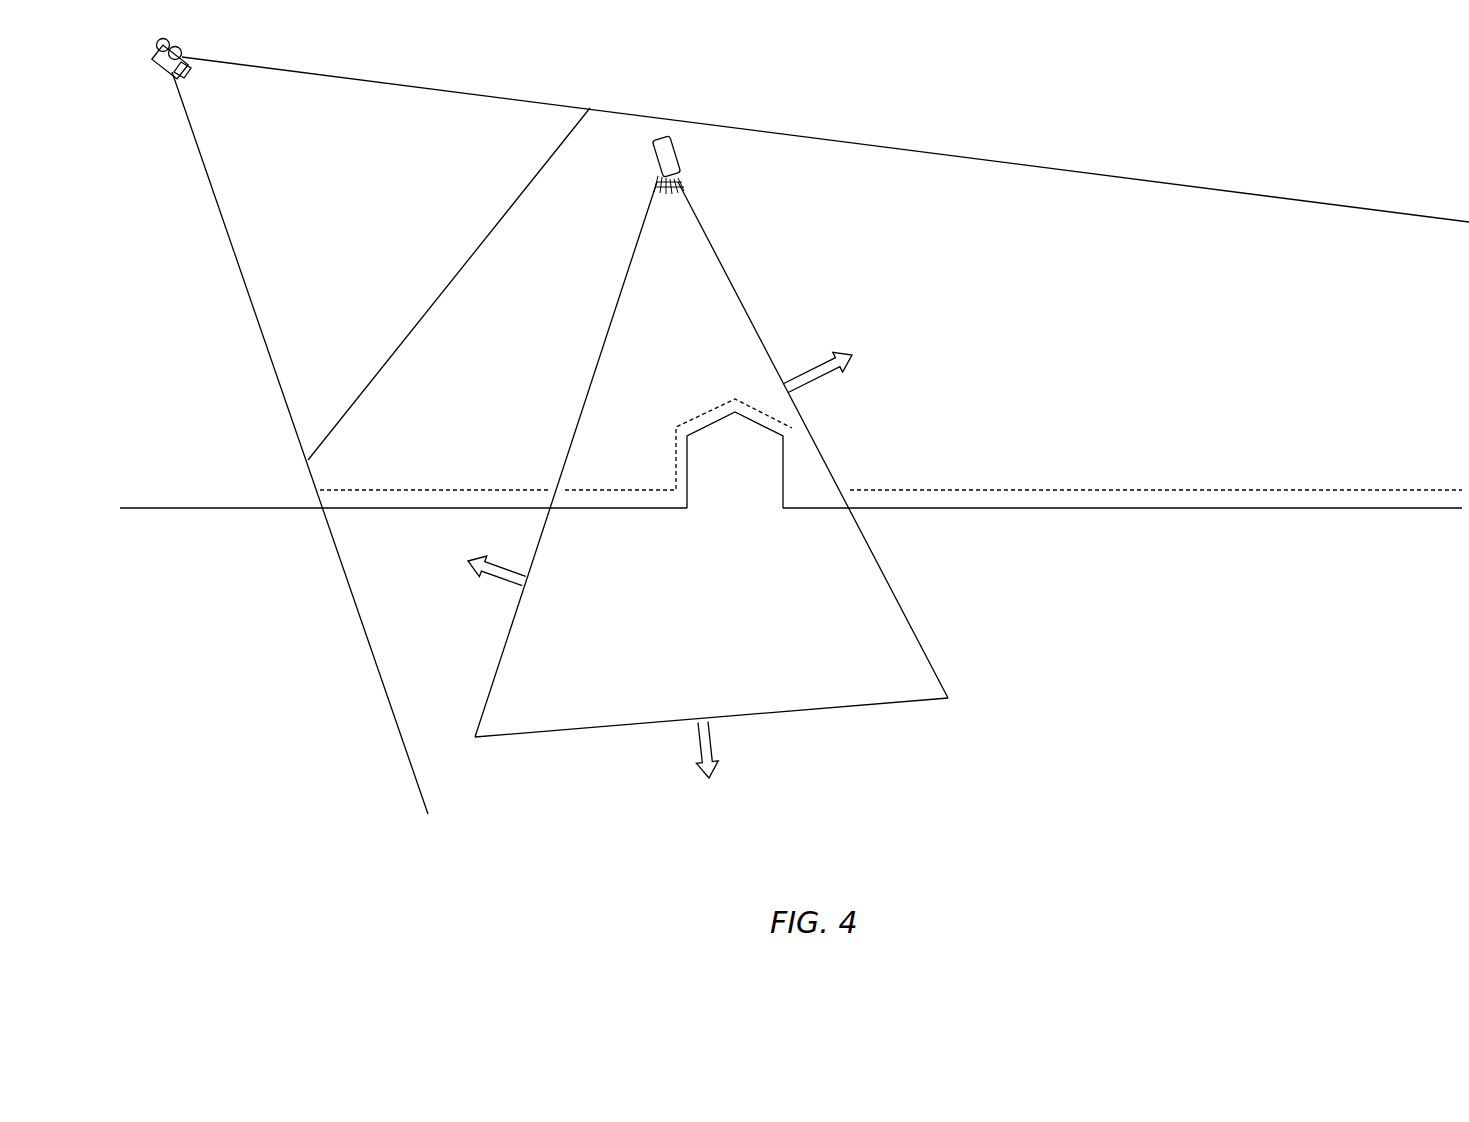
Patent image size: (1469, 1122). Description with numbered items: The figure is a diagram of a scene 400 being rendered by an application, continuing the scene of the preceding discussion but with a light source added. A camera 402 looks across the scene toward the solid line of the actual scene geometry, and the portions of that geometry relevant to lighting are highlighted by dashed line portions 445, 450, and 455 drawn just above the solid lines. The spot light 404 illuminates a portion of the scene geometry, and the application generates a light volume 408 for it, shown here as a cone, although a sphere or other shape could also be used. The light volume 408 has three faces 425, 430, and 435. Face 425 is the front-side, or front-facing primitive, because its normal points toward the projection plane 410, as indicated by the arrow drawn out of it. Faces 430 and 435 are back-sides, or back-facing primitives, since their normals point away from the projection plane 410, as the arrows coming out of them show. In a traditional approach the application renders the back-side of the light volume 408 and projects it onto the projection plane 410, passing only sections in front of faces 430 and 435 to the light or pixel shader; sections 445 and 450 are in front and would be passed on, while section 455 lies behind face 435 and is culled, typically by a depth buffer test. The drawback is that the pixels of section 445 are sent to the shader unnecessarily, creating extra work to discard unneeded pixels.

The scene 400 is at (1392, 865).
The camera 402 is at (157, 66).
The spot light 404 is at (654, 158).
The light volume 408 is at (719, 480).
The projection plane 410 is at (443, 290).
The face 425 is at (516, 609).
The face 430 is at (593, 728).
The face 435 is at (918, 633).
The dashed line portion 445 is at (436, 490).
The dashed line portion 450 is at (704, 420).
The dashed line portion 455 is at (968, 490).